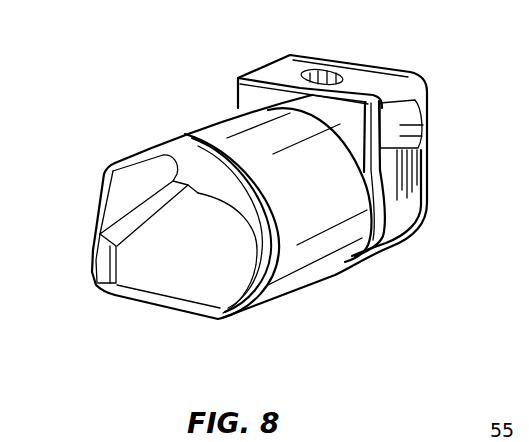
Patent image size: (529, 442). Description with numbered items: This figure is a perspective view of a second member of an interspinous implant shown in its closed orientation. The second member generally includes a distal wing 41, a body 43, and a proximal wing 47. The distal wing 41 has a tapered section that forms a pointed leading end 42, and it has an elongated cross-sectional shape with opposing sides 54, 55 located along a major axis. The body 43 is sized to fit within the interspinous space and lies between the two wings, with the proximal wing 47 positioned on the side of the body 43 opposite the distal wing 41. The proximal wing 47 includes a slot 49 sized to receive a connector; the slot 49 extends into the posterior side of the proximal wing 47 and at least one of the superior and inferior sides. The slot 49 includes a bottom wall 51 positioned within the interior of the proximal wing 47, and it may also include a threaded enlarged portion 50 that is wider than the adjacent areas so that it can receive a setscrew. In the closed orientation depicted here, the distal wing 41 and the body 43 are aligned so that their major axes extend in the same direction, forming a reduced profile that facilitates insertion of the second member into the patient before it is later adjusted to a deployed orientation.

The distal wing 41 is at (123, 203).
The pointed leading end 42 is at (97, 265).
The body 43 is at (307, 265).
The proximal wing 47 is at (280, 68).
The slot 49 is at (402, 177).
The threaded enlarged portion 50 is at (398, 128).
The bottom wall 51 is at (325, 74).
The opposing side 54 is at (227, 322).
The opposing side 55 is at (152, 147).